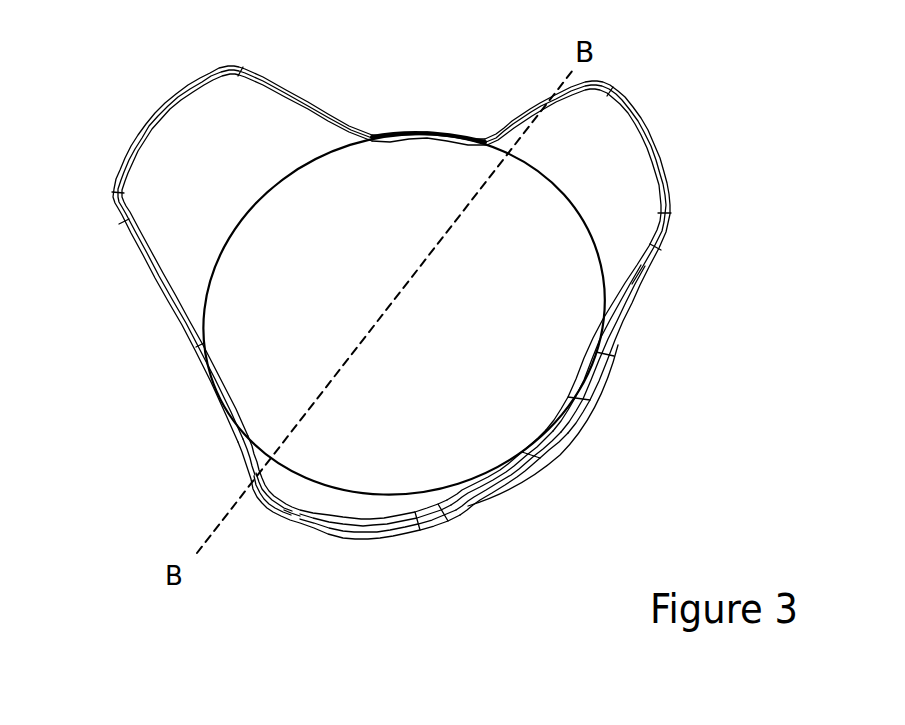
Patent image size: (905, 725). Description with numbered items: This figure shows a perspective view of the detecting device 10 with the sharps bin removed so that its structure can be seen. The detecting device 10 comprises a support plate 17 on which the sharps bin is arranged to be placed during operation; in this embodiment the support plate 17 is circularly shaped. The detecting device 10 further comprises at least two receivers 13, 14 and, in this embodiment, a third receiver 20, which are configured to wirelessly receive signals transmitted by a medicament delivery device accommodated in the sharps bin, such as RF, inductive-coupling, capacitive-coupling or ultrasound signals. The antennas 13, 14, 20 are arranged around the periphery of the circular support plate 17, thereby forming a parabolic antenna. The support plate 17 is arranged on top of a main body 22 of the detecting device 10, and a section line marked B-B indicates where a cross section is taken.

The detecting device 10 is at (583, 438).
The receiver 13 is at (137, 210).
The receiver 14 is at (640, 173).
The support plate 17 is at (434, 157).
The third receiver 20 is at (347, 517).
The main body 22 is at (536, 463).